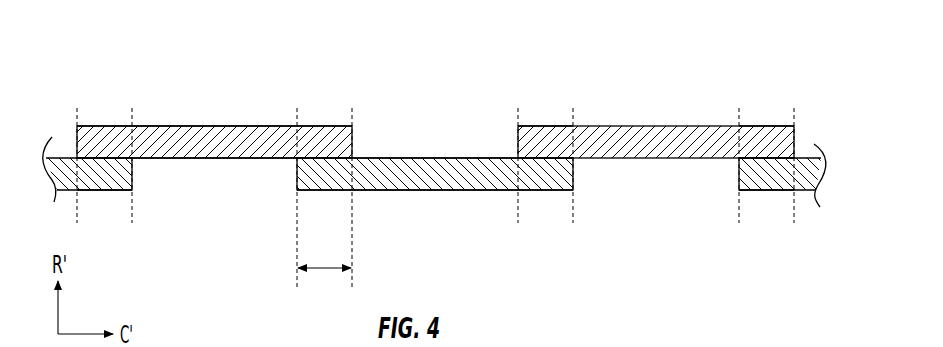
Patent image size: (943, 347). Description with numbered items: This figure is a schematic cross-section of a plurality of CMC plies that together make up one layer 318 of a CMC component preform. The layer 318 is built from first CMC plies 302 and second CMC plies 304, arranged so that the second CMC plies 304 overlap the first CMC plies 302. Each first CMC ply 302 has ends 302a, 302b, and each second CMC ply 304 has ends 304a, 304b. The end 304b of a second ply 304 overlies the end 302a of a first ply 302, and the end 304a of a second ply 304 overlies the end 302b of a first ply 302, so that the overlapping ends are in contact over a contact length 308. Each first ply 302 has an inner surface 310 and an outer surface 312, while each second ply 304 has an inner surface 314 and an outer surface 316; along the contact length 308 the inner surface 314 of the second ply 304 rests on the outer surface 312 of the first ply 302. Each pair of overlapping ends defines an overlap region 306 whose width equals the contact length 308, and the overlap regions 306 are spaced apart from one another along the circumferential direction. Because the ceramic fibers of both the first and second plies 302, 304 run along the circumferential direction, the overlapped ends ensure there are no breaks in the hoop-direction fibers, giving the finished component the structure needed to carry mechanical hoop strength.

The layer of CMC plies 318 is at (436, 122).
The first CMC plies 302 is at (213, 136).
The end of first CMC ply 302a is at (105, 133).
The end of first CMC ply 302b is at (326, 134).
The second CMC plies 304 is at (63, 170).
The end of second CMC ply 304a is at (313, 178).
The end of second CMC ply 304b is at (118, 178).
The overlap region 306 is at (106, 201).
The contact length 308 is at (324, 270).
The inner surface of first CMC ply 310 is at (186, 124).
The outer surface of first CMC ply 312 is at (232, 160).
The inner surface of second CMC ply 314 is at (384, 157).
The outer surface of second CMC ply 316 is at (492, 193).